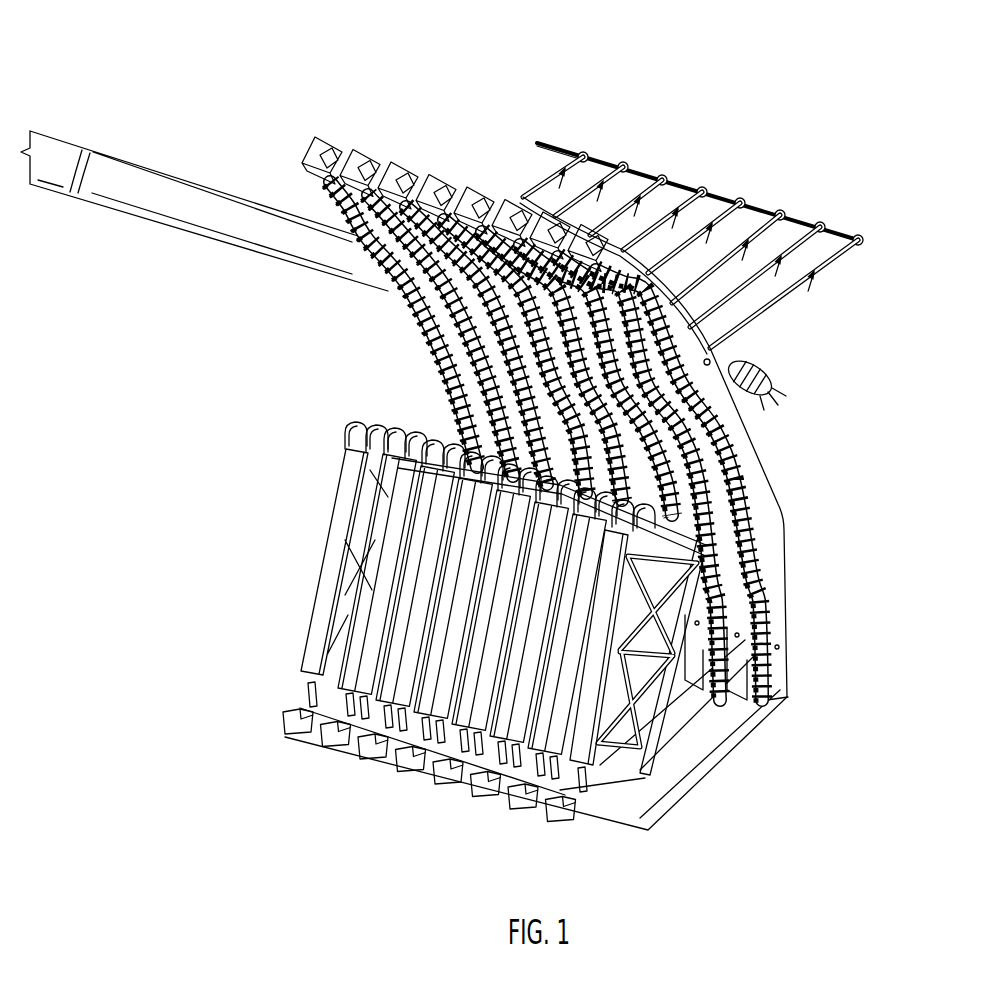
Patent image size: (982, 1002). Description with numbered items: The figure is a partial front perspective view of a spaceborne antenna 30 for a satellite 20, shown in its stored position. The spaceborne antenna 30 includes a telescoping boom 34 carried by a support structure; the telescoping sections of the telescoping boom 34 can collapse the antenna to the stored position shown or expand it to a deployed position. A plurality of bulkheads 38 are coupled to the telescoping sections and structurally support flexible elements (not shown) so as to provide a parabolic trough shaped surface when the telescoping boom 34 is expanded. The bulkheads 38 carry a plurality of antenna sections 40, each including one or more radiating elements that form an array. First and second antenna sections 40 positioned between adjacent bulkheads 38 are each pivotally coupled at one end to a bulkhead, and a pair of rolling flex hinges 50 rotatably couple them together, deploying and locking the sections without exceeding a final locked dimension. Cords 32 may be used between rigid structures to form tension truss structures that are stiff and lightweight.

The satellite 20 is at (199, 48).
The spaceborne antenna 30 is at (762, 793).
The cords 32 is at (798, 275).
The telescoping boom 34 is at (322, 257).
The bulkheads 38 is at (630, 168).
The antenna sections 40 is at (302, 668).
The rolling flex hinges 50 is at (667, 497).